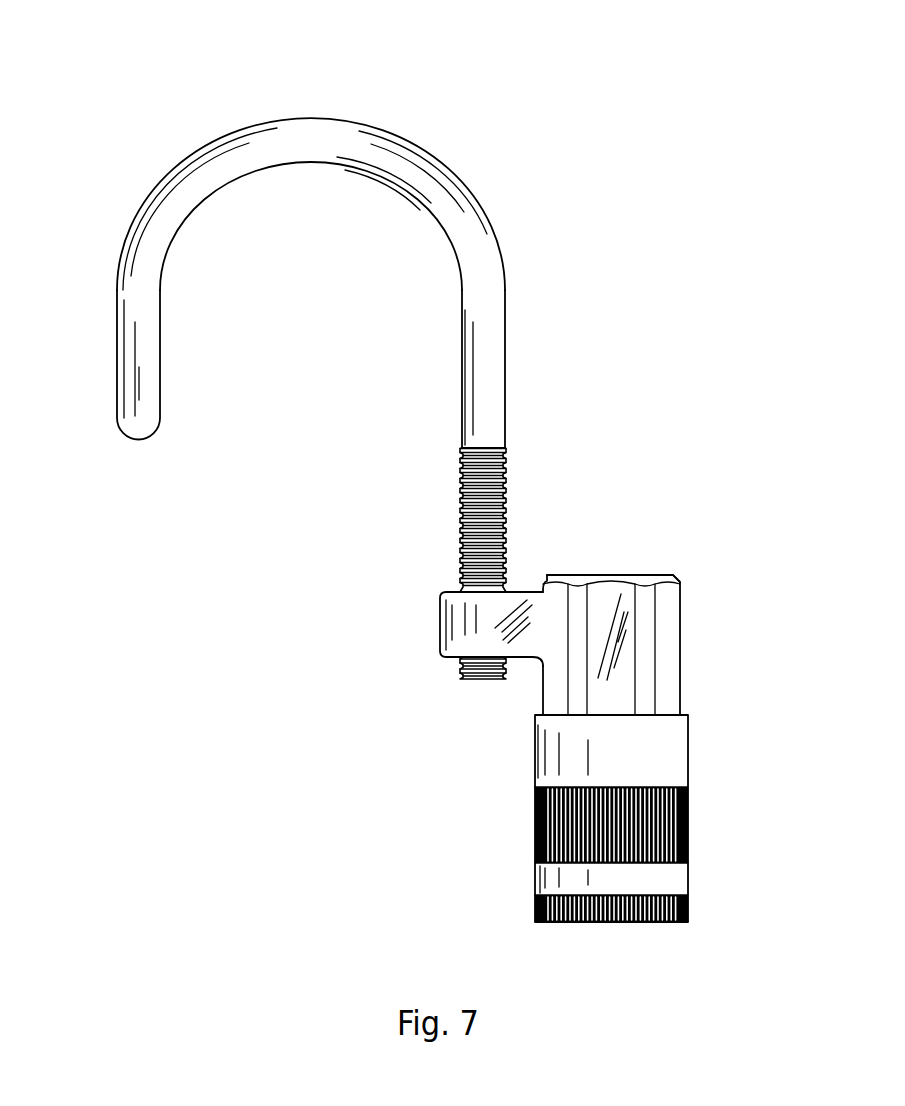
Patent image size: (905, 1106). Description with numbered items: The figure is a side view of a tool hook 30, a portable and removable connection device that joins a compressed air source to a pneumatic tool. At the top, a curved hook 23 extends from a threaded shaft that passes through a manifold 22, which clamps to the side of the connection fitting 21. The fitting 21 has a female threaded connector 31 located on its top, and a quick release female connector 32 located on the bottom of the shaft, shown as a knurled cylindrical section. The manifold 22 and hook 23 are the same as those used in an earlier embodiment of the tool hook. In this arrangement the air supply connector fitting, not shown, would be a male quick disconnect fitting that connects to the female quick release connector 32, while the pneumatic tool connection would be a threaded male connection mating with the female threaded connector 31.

The tool hook 30 is at (137, 90).
The hook 23 is at (395, 137).
The manifold 22 is at (438, 630).
The female threaded connection fitting 21 is at (681, 648).
The female threaded connector 31 is at (655, 575).
The quick release female connector 32 is at (535, 905).